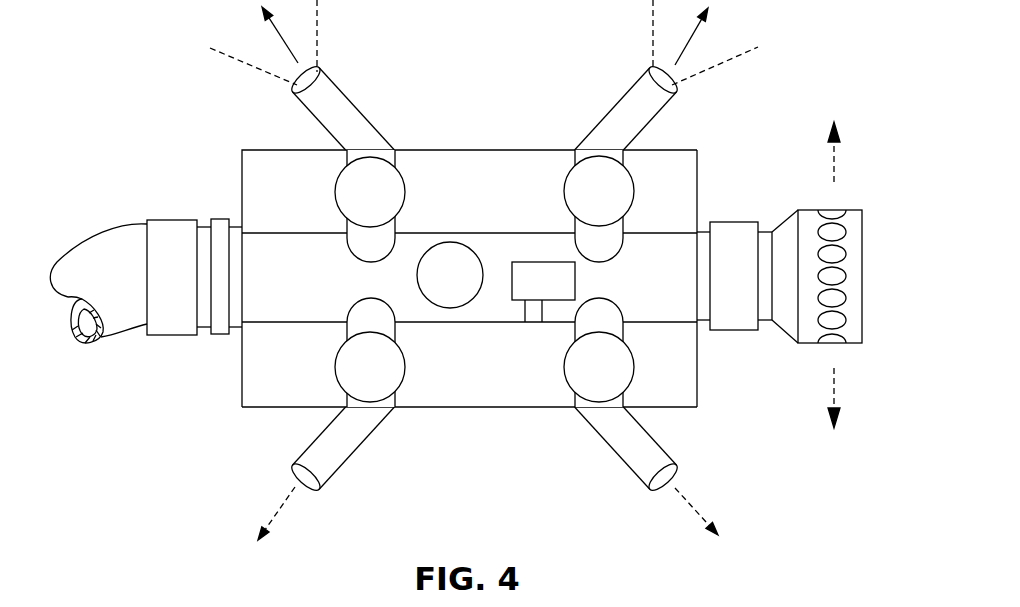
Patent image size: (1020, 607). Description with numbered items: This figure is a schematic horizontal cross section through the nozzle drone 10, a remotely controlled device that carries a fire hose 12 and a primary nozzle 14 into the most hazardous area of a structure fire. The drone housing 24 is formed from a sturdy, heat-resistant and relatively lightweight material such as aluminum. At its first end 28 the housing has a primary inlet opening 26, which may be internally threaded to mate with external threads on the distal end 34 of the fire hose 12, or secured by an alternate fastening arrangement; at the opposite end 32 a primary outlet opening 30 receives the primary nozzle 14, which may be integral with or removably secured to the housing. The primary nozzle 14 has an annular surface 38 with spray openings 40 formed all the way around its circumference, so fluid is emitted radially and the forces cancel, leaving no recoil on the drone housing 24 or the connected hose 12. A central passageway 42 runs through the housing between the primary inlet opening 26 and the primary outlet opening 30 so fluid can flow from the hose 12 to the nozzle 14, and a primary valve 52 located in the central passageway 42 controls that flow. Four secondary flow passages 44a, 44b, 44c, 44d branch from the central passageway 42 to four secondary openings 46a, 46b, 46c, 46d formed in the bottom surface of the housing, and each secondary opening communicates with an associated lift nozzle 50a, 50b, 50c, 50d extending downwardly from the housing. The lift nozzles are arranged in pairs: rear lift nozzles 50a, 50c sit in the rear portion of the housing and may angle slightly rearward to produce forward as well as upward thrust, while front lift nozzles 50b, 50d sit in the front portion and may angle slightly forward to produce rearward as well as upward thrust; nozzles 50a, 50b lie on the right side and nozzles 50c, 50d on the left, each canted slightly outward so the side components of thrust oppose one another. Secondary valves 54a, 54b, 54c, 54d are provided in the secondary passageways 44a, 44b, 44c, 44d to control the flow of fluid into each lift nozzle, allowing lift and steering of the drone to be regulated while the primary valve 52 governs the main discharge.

The nozzle drone 10 is at (217, 428).
The fire hose 12 is at (107, 252).
The primary nozzle 14 is at (802, 275).
The drone housing 24 is at (478, 135).
The primary inlet opening 26 is at (250, 262).
The first end 28 is at (252, 380).
The primary outlet opening 30 is at (692, 303).
The opposite end 32 is at (698, 160).
The distal end of the fire hose 34 is at (203, 305).
The annular surface 38 is at (855, 208).
The spray openings 40 is at (833, 322).
The central passageway 42 is at (482, 232).
The secondary flow passage 44a is at (357, 330).
The secondary flow passage 44b is at (565, 368).
The secondary flow passage 44c is at (347, 227).
The secondary flow passage 44d is at (665, 115).
The secondary opening 46a is at (397, 400).
The secondary opening 46b is at (572, 395).
The secondary opening 46c is at (395, 155).
The secondary opening 46d is at (575, 157).
The rear lift nozzle 50a is at (335, 467).
The front lift nozzle 50b is at (617, 457).
The rear lift nozzle 50c is at (338, 80).
The front lift nozzle 50d is at (637, 80).
The primary valve 52 is at (448, 242).
The secondary valve 54a is at (403, 367).
The secondary valve 54b is at (599, 367).
The secondary valve 54c is at (405, 180).
The secondary valve 54d is at (565, 185).